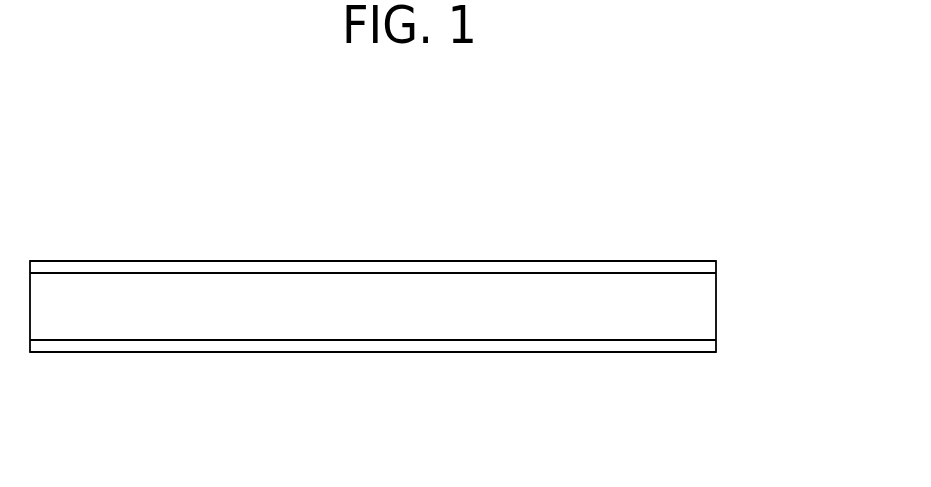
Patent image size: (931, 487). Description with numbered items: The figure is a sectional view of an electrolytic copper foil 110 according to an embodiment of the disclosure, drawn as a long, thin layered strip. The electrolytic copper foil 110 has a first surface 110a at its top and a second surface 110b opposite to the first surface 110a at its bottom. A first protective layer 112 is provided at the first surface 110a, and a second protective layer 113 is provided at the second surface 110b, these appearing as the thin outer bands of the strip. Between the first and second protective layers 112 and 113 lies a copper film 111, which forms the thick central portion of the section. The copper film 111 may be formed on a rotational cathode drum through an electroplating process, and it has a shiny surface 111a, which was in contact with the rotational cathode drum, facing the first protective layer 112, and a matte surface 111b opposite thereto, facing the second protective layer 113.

The electrolytic copper foil 110 is at (425, 110).
The copper film 111 is at (707, 305).
The first protective layer 112 is at (707, 265).
The second protective layer 113 is at (707, 347).
The first surface 110a is at (130, 260).
The second surface 110b is at (130, 353).
The shiny surface 111a is at (257, 266).
The matte surface 111b is at (257, 341).